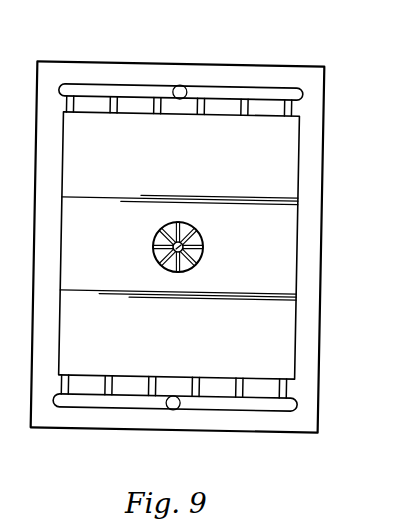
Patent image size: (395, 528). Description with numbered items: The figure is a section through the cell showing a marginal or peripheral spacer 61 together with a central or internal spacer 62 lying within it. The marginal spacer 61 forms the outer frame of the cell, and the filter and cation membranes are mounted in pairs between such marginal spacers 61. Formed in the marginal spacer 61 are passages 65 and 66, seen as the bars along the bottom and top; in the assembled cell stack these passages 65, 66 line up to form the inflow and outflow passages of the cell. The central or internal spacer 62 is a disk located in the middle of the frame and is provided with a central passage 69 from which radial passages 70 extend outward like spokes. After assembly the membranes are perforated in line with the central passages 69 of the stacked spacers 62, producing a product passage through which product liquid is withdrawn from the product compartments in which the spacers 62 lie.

The marginal or peripheral spacer 61 is at (307, 202).
The central or internal spacer 62 is at (203, 259).
The passage 65 is at (173, 410).
The passage 66 is at (180, 85).
The central passage 69 is at (197, 228).
The radial passage 70 is at (180, 271).